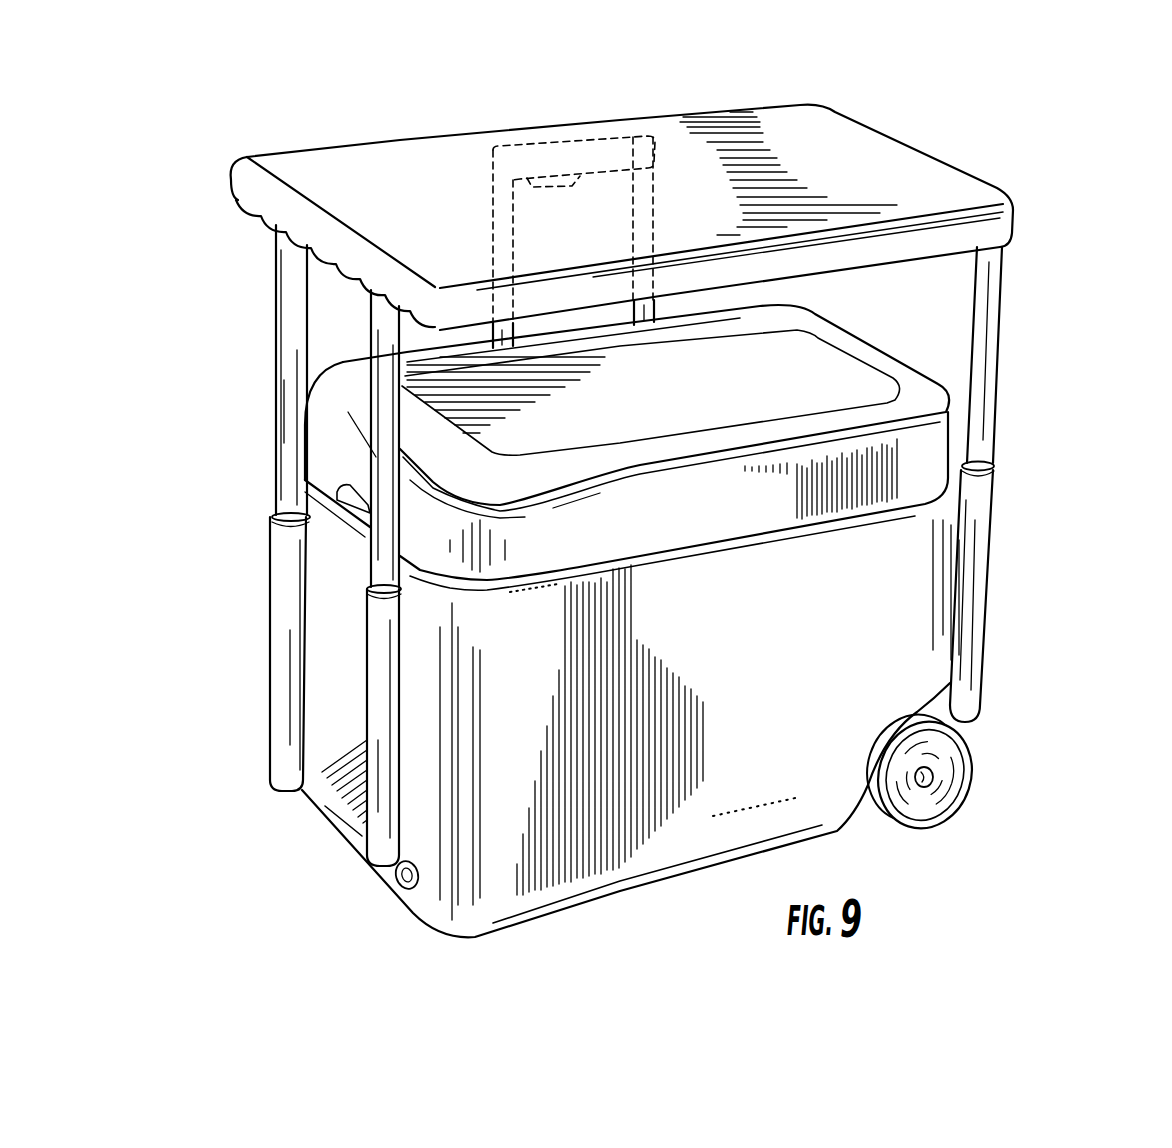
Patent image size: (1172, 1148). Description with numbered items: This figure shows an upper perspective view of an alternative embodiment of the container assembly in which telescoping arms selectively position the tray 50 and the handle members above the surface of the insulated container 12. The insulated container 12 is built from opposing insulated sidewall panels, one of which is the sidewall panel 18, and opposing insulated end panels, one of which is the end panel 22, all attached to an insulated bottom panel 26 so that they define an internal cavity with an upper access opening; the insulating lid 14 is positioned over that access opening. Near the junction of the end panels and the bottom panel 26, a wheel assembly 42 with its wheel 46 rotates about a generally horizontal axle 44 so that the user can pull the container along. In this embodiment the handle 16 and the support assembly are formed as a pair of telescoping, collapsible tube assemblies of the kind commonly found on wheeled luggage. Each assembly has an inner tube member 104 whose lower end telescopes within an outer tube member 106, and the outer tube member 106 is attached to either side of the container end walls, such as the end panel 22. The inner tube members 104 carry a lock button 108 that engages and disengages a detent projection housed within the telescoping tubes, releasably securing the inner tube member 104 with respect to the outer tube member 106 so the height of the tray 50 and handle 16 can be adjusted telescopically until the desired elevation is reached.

The tray 50 is at (312, 117).
The inner tube member 104 is at (493, 190).
The lock button 108 is at (583, 182).
The handle 16 is at (246, 364).
The outer tube member 106 is at (273, 610).
The insulated container 12 is at (675, 626).
The insulating lid 14 is at (708, 414).
The insulated sidewall panel 18 is at (893, 602).
The insulated end panel 22 is at (327, 647).
The insulated bottom panel 26 is at (709, 873).
The wheel assembly 42 is at (983, 771).
The axle 44 is at (930, 770).
The wheel 46 is at (948, 812).